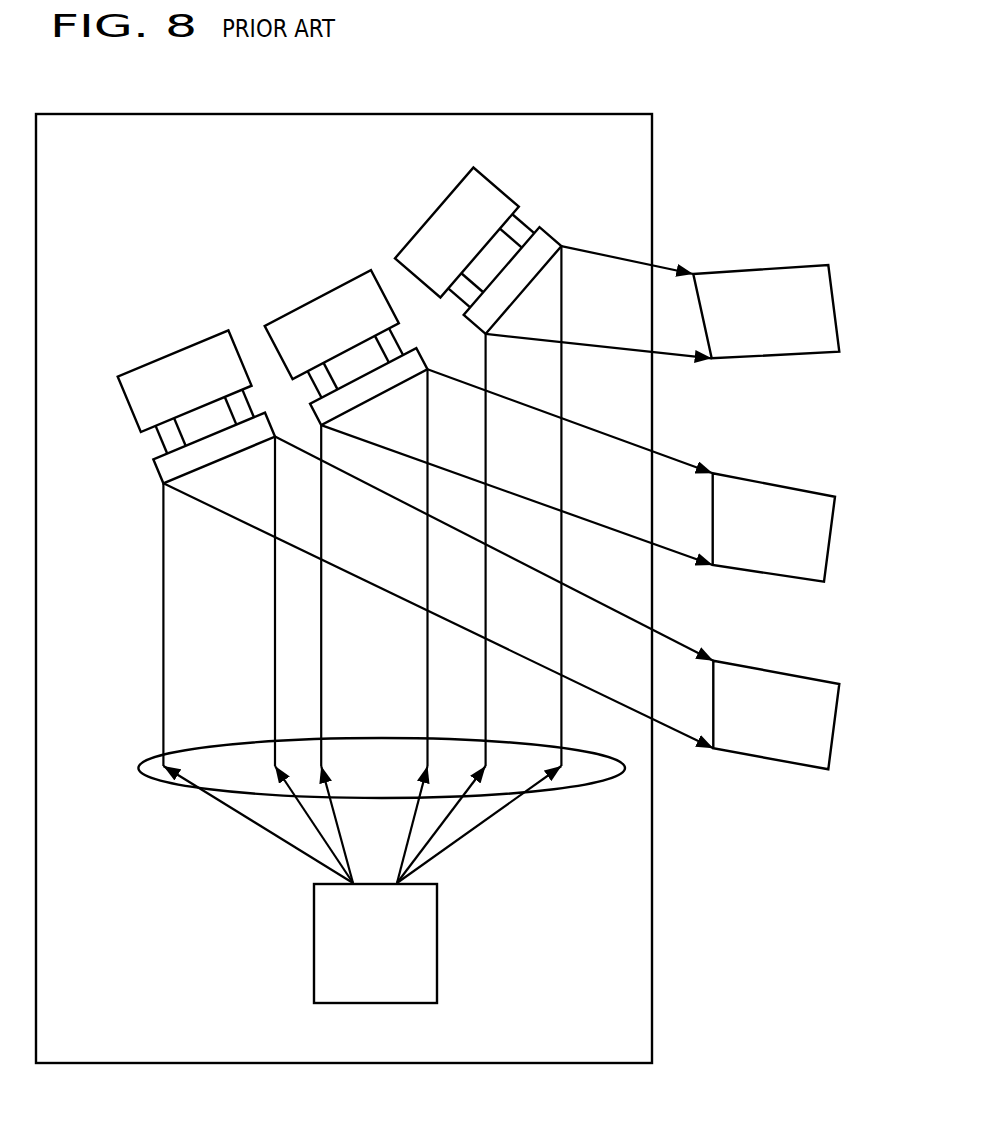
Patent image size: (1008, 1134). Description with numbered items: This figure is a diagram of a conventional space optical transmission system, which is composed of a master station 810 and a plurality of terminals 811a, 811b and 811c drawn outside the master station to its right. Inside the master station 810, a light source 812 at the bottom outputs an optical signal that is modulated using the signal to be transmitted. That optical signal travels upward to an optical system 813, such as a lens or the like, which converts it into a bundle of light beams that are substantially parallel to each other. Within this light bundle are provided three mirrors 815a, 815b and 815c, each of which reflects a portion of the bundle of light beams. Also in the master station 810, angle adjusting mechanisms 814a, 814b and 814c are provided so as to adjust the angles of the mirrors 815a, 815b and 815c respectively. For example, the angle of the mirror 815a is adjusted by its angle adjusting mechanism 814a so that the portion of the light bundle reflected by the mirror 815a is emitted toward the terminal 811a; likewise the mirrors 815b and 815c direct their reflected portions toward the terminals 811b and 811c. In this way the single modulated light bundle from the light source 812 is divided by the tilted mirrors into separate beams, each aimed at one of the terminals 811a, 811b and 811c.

The master station 810 is at (652, 1005).
The terminal 811a is at (800, 673).
The terminal 811b is at (794, 487).
The terminal 811c is at (837, 313).
The light source 812 is at (437, 978).
The optical system 813 is at (140, 767).
The angle adjusting mechanism 814a is at (170, 353).
The angle adjusting mechanism 814b is at (350, 281).
The angle adjusting mechanism 814c is at (427, 222).
The mirror 815a is at (167, 471).
The mirror 815b is at (363, 378).
The mirror 815c is at (542, 228).